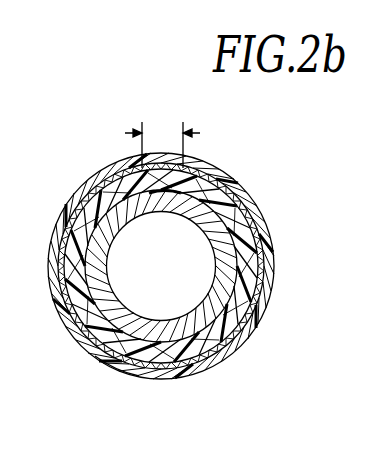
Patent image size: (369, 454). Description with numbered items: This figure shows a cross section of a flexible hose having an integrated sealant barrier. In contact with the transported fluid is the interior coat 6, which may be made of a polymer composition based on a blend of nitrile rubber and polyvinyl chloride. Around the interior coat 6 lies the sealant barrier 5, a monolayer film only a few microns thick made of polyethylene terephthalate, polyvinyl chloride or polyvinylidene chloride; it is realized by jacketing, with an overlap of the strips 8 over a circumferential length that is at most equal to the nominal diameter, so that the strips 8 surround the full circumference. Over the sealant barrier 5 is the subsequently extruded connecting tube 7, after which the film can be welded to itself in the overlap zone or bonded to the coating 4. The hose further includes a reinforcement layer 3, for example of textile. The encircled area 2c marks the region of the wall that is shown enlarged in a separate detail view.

The encircled area 2c is at (117, 366).
The reinforcement layer 3 is at (233, 188).
The coating 4 is at (257, 224).
The sealant barrier 5 is at (240, 304).
The interior coat 6 is at (203, 325).
The connecting tube 7 is at (90, 222).
The strips 8 is at (162, 130).